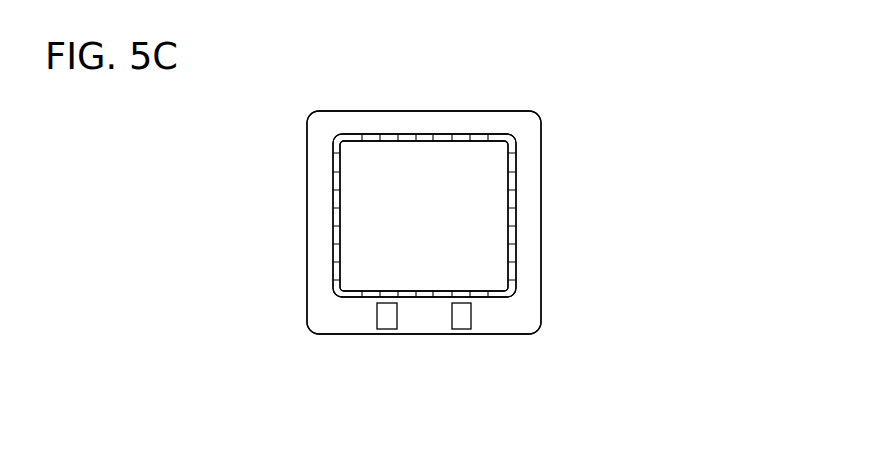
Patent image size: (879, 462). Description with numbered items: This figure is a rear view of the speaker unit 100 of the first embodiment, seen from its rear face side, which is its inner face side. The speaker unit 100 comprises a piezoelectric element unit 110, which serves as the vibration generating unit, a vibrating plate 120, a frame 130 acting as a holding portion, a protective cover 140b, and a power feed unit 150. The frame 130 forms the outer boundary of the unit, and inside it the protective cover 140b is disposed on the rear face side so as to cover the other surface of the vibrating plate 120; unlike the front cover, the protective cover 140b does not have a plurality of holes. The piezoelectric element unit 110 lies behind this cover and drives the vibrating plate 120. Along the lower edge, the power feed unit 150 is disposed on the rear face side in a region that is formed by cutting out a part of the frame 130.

The speaker unit 100 is at (582, 148).
The piezoelectric element unit 110 is at (444, 255).
The vibrating plate 120 is at (495, 240).
The frame 130 is at (517, 302).
The protective cover 140b is at (495, 203).
The power feed unit 150 is at (462, 312).